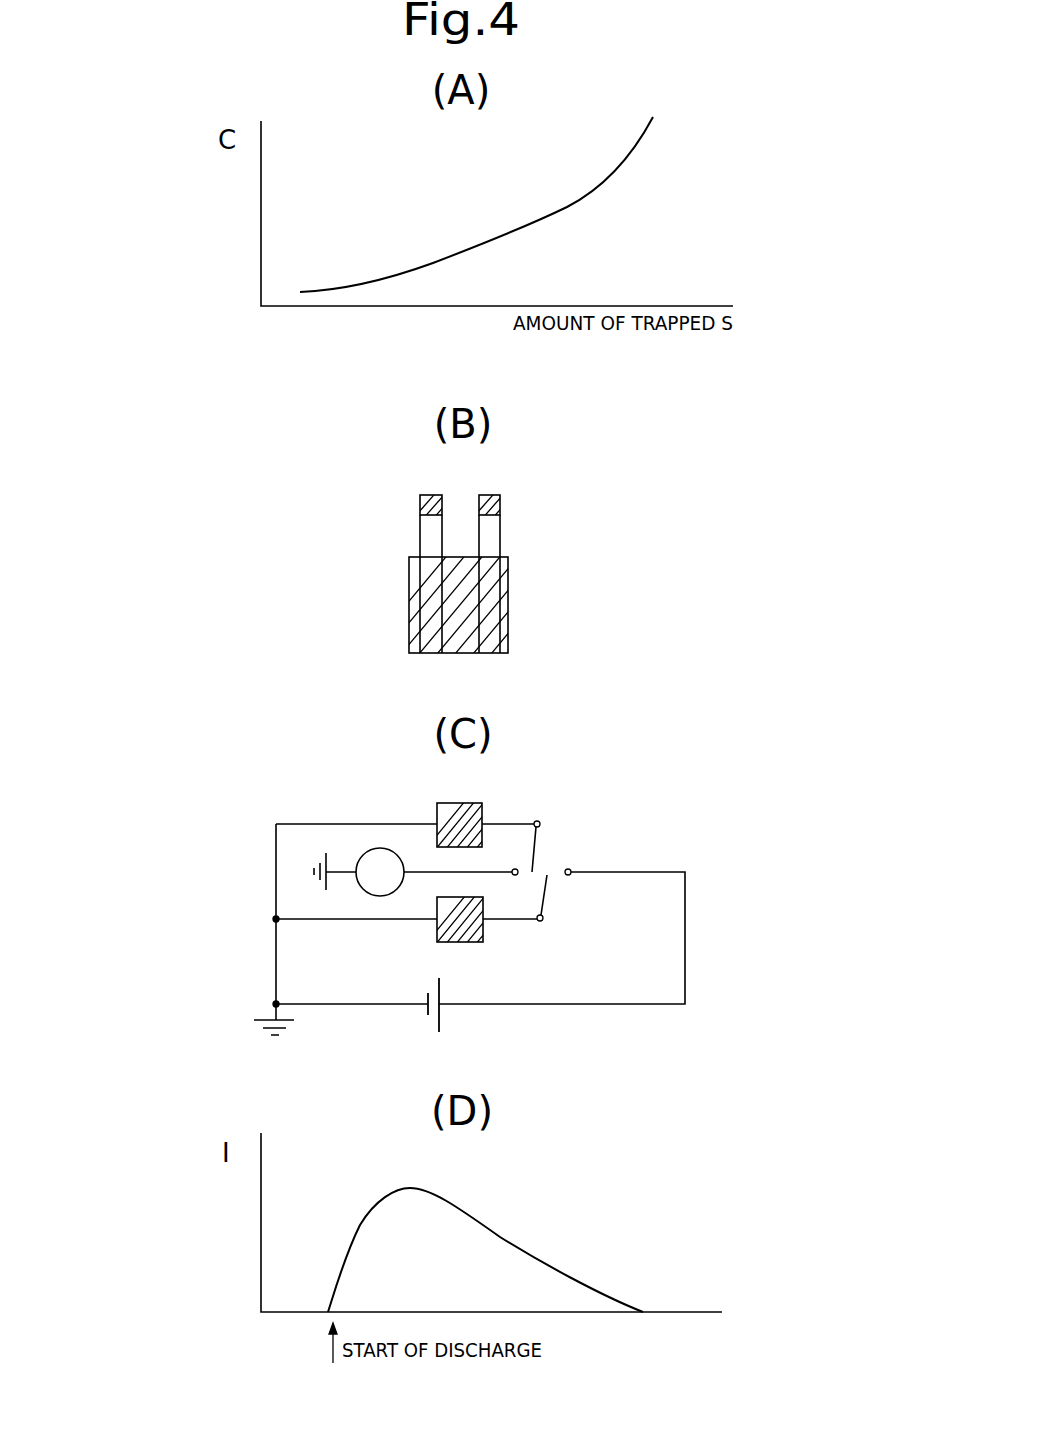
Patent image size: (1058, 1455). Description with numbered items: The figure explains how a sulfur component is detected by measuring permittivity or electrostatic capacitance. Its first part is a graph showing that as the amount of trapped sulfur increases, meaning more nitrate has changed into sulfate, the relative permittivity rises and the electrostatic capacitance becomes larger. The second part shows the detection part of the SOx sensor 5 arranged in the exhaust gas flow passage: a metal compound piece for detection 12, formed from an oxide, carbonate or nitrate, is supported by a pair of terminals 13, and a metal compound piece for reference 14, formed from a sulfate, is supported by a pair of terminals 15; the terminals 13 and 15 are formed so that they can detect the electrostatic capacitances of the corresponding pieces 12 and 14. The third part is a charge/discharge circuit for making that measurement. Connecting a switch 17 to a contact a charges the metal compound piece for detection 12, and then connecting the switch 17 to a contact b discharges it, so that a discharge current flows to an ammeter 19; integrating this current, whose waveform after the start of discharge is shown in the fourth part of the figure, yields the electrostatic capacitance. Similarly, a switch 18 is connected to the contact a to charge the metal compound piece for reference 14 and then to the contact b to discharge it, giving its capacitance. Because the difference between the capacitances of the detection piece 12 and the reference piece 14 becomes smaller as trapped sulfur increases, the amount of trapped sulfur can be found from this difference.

The SOx sensor 5 is at (409, 625).
The metal compound piece for detection 12 is at (431, 496).
The pair of terminals 13 is at (441, 537).
The metal compound piece for reference 14 is at (489, 496).
The pair of terminals 15 is at (480, 537).
The switch 17 is at (540, 850).
The switch 18 is at (550, 890).
The ammeter 19 is at (367, 852).
The contact a is at (570, 868).
The contact b is at (514, 868).